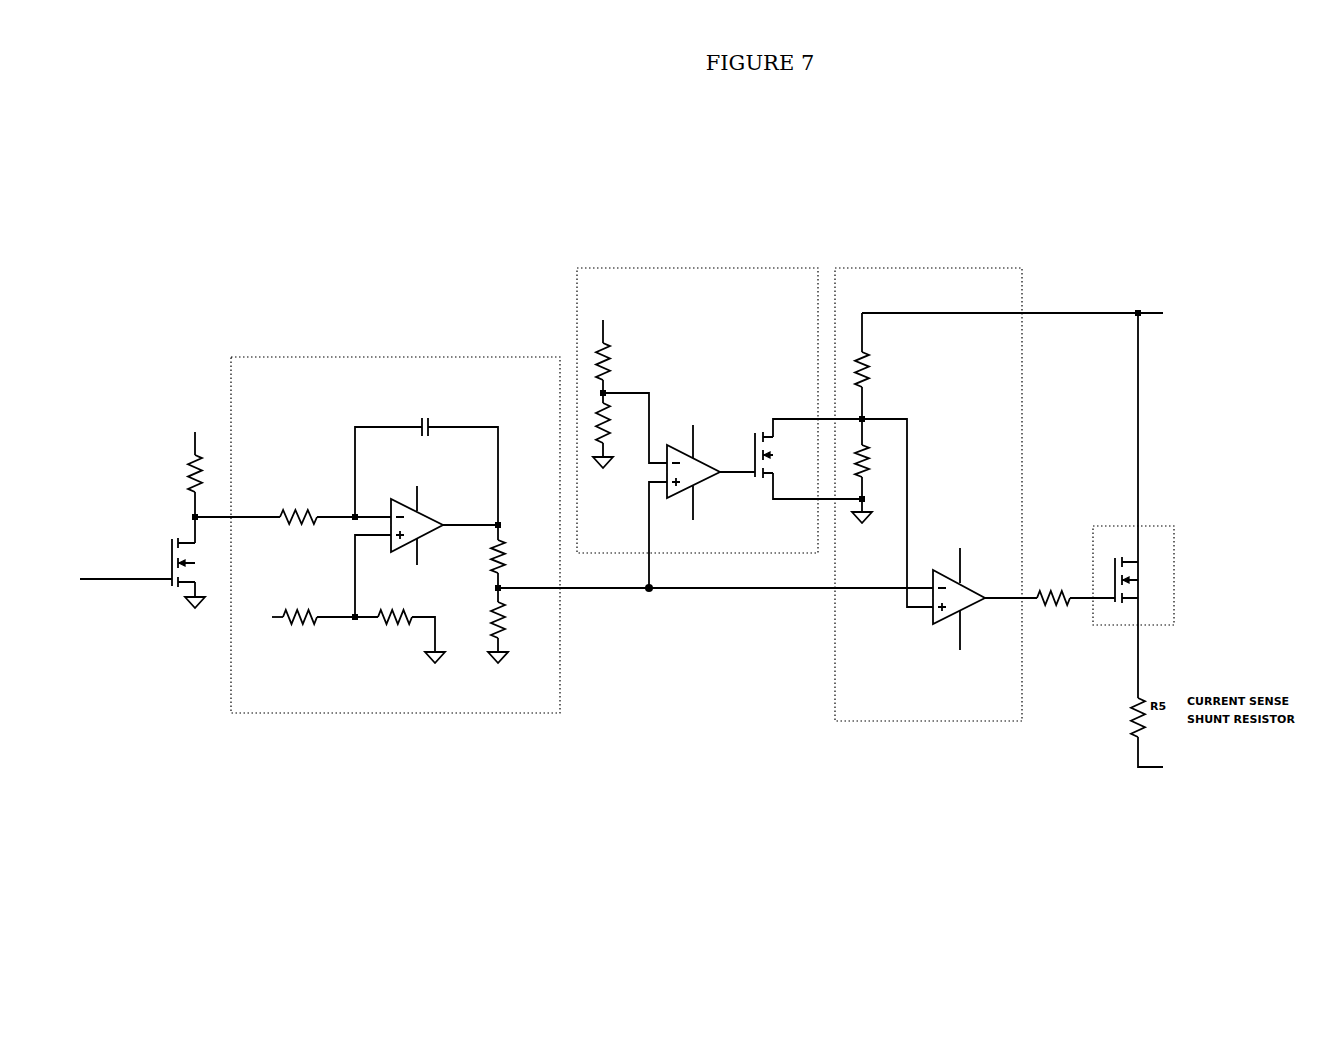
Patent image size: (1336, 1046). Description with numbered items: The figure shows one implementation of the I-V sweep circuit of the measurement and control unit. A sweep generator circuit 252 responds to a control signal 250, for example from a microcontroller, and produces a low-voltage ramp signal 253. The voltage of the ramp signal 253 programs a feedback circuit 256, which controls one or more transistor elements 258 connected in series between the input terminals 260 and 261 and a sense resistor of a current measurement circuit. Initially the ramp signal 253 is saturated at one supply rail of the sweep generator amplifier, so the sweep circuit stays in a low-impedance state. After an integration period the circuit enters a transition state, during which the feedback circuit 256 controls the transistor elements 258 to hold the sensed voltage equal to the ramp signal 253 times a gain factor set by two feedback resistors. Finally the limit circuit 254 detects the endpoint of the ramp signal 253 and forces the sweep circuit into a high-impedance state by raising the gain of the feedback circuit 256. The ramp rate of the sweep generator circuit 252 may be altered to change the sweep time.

The control signal 250 is at (123, 618).
The sweep generator circuit 252 is at (431, 344).
The ramp signal 253 is at (724, 603).
The limit circuit 254 is at (737, 253).
The feedback circuit 256 is at (1001, 253).
The transistor elements 258 is at (1170, 518).
The input terminal 260 is at (1218, 298).
The input terminal 261 is at (1210, 797).